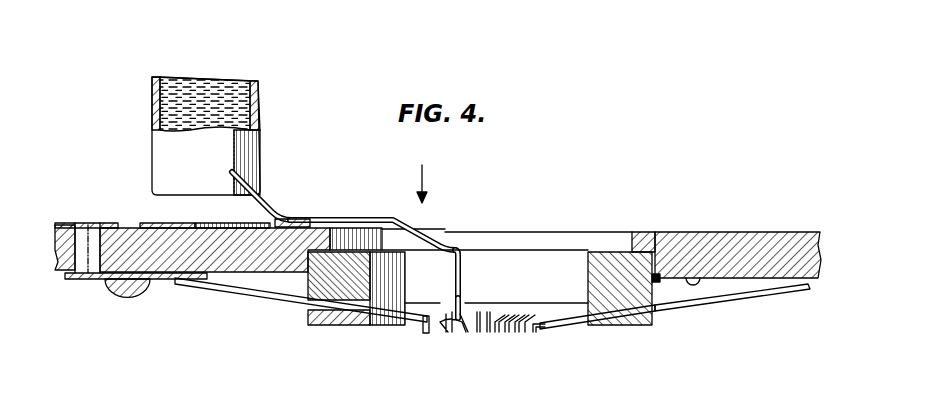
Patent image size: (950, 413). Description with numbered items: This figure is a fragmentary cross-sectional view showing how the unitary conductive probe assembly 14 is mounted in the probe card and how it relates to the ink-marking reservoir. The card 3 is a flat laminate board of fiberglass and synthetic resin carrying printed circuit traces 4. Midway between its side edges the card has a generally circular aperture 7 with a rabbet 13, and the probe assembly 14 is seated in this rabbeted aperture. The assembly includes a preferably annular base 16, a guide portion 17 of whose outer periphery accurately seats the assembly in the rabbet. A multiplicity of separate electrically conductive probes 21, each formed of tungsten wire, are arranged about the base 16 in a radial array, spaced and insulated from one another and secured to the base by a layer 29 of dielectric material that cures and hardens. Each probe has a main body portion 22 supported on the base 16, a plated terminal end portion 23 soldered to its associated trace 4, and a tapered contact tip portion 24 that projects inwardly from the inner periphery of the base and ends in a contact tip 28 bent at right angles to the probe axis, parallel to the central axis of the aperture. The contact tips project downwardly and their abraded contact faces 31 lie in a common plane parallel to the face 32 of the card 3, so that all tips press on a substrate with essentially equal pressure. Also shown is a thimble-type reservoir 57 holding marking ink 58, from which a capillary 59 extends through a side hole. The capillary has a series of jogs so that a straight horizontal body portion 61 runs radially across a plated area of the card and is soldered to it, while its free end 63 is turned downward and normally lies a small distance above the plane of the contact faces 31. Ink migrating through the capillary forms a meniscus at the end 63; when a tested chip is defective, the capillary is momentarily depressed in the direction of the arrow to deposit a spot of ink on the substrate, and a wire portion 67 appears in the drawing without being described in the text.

The card 3 is at (755, 240).
The printed circuit traces 4 is at (175, 282).
The aperture 7 is at (558, 242).
The rabbet 13 is at (622, 250).
The unitary conductive probe assembly 14 is at (318, 334).
The base 16 is at (590, 286).
The guide portion 17 is at (292, 268).
The electrically conductive probes 21 is at (207, 305).
The main body portion 22 is at (254, 300).
The terminal end portion 23 is at (130, 290).
The contact tip portion 24 is at (480, 325).
The contact tip 28 is at (424, 326).
The dielectric layer 29 is at (346, 327).
The contact faces 31 is at (470, 334).
The face of the card 32 is at (688, 278).
The reservoir 57 is at (155, 172).
The marking ink 58 is at (197, 90).
The capillary 59 is at (268, 208).
The body portion of the capillary 61 is at (363, 218).
The free end of the capillary 63 is at (455, 318).
The wire portion 67 is at (462, 272).